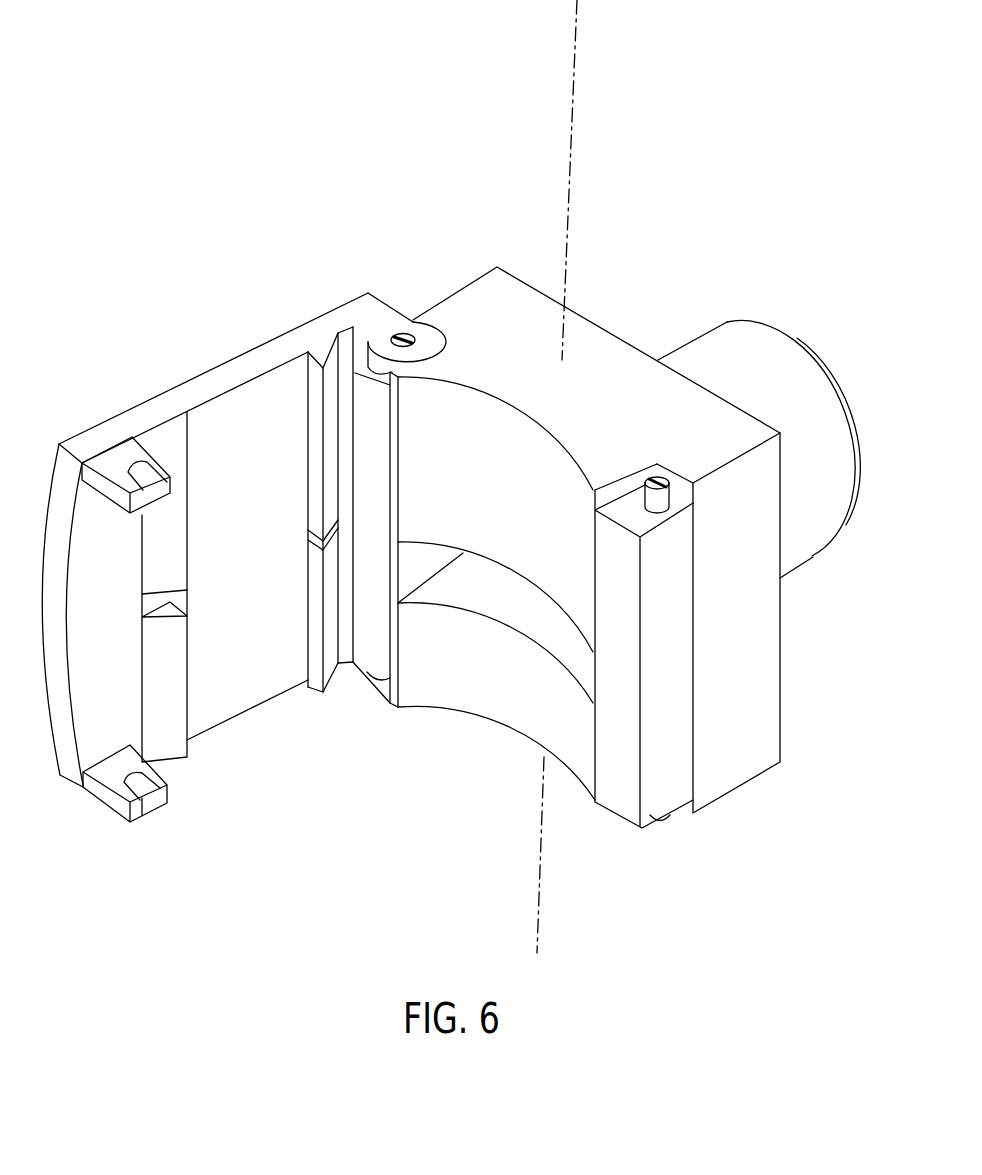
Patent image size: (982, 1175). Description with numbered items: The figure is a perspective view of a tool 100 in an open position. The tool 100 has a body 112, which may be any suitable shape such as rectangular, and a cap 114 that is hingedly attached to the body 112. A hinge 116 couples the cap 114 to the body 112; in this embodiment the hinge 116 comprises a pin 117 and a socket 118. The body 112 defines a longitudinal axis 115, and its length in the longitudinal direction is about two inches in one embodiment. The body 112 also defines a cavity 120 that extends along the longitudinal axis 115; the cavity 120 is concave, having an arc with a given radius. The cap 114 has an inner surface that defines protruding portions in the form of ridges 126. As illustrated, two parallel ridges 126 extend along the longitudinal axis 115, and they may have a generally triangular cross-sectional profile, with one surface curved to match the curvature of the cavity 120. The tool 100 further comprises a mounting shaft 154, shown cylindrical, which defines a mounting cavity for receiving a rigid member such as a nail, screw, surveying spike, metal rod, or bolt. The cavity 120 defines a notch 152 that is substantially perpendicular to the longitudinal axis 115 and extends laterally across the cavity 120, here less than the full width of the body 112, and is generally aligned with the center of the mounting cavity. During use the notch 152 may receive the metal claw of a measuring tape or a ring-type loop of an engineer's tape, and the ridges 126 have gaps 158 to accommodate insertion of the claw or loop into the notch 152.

The tool 100 is at (722, 111).
The body 112 is at (812, 738).
The cap 114 is at (207, 345).
The longitudinal axis 115 is at (578, 47).
The hinge 116 is at (407, 262).
The pin 117 is at (409, 336).
The socket 118 is at (383, 345).
The cavity 120 is at (522, 750).
The ridge 126 is at (177, 747).
The notch 152 is at (490, 588).
The mounting shaft 154 is at (748, 340).
The gap 158 is at (194, 594).